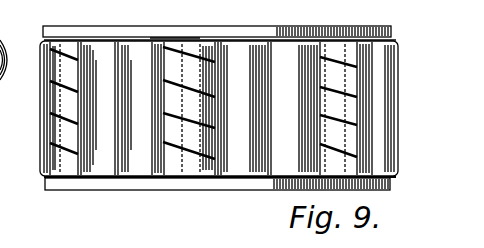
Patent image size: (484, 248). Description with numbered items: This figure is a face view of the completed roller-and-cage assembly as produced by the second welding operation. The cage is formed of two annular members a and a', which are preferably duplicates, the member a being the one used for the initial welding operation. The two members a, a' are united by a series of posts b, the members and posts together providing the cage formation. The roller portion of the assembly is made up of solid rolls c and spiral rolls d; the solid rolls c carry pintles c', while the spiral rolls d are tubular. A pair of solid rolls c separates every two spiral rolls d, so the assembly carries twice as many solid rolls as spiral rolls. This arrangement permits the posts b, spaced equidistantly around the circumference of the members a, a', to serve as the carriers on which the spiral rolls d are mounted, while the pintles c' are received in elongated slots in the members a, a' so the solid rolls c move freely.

The pintles c' is at (217, 18).
The annular member a' is at (175, 19).
The annular member a is at (217, 196).
The posts b is at (0, 137).
The solid rolls c is at (214, 108).
The spiral rolls d is at (62, 156).